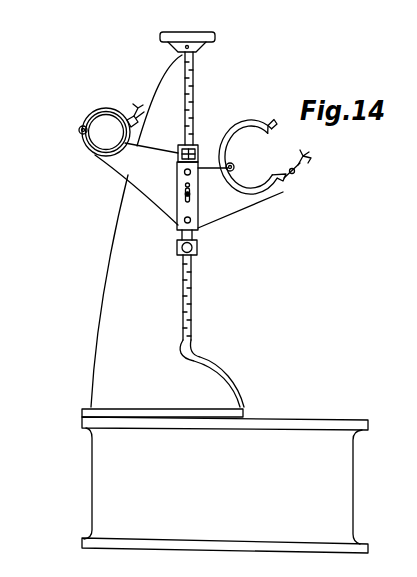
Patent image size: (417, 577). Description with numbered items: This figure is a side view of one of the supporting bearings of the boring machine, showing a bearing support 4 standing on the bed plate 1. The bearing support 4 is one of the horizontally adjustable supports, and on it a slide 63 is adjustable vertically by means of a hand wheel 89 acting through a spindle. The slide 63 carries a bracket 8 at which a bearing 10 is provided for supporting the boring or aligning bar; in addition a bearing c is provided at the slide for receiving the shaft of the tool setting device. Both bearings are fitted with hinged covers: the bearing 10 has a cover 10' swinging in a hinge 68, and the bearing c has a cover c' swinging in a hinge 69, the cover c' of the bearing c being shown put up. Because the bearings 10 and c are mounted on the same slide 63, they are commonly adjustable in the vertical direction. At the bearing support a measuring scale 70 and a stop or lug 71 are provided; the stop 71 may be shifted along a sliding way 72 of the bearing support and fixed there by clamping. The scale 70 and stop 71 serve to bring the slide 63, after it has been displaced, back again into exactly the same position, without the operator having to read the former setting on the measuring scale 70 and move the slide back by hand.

The bed plate 1 is at (345, 483).
The bearing support 4 is at (110, 318).
The bracket 8 is at (138, 173).
The bearing 10 is at (291, 181).
The cover 10' is at (249, 141).
The slide 63 is at (192, 205).
The hinge 68 is at (79, 133).
The hinge 69 is at (233, 165).
The measuring scale 70 is at (191, 301).
The stop or lug 71 is at (198, 248).
The sliding way 72 is at (192, 352).
The hand wheel 89 is at (215, 40).
The bearing c is at (96, 145).
The cover c' is at (105, 119).